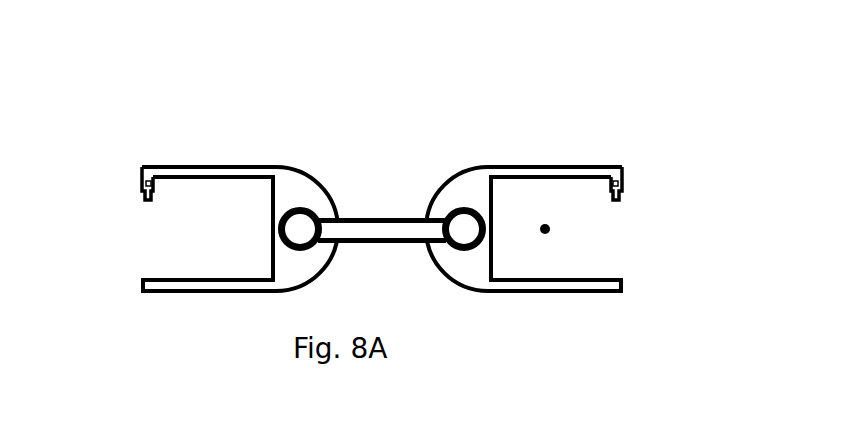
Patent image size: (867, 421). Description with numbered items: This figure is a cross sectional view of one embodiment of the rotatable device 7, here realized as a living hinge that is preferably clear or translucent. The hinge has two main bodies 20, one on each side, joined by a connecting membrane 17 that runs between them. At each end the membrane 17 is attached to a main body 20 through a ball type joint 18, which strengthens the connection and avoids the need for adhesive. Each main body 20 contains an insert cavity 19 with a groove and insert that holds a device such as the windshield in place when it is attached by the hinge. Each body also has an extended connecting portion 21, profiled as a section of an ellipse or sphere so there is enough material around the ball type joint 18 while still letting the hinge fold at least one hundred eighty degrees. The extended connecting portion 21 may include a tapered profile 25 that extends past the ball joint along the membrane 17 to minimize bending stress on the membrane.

The rotatable device 7 is at (390, 186).
The living hinge membrane 17 is at (455, 147).
The living hinge ball joint attachment 18 is at (402, 151).
The living hinge insertion cavity 19 is at (632, 173).
The living hinge attachment mechanism 20 is at (397, 266).
The living hinge bottom portion of attachment mechanism 21 is at (390, 149).
The tapered profile for stress relief 25 is at (437, 298).